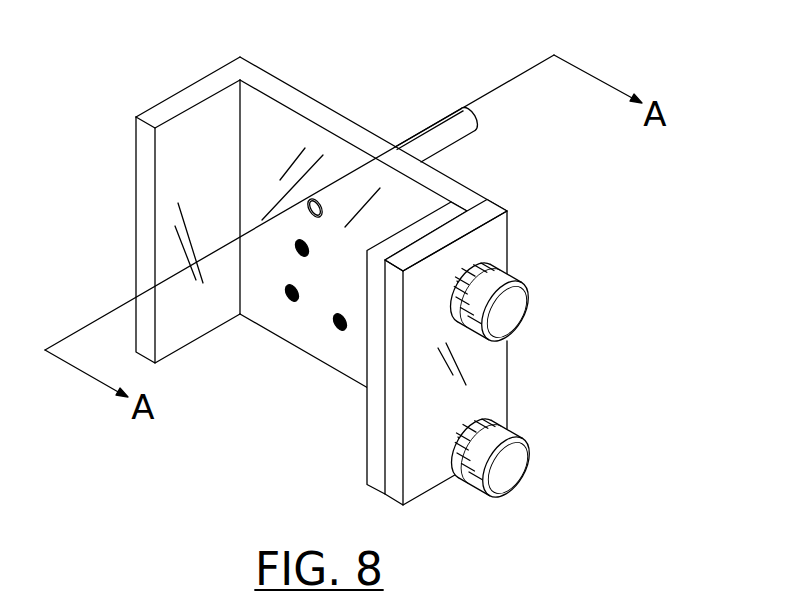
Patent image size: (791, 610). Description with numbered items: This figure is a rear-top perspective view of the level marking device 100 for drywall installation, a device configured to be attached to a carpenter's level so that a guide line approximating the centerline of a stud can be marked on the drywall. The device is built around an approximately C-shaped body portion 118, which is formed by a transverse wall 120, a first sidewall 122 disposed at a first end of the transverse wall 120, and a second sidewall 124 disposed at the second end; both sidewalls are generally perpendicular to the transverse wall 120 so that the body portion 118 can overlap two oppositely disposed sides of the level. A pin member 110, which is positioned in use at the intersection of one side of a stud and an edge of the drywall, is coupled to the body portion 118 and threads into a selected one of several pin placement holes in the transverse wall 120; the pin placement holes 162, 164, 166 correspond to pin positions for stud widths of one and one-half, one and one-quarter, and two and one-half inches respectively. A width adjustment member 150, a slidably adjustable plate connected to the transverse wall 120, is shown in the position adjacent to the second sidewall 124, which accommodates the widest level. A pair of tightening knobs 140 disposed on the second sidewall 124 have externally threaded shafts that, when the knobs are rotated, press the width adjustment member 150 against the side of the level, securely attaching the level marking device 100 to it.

The level marking device 100 is at (354, 297).
The pin member 110 is at (442, 139).
The body portion 118 is at (323, 365).
The transverse wall 120 is at (308, 108).
The first sidewall 122 is at (203, 185).
The second sidewall 124 is at (485, 367).
The tightening knobs 140 is at (503, 308).
The width adjustment member 150 is at (376, 433).
The pin placement hole 162 is at (295, 250).
The pin placement hole 164 is at (288, 294).
The pin placement hole 166 is at (339, 314).